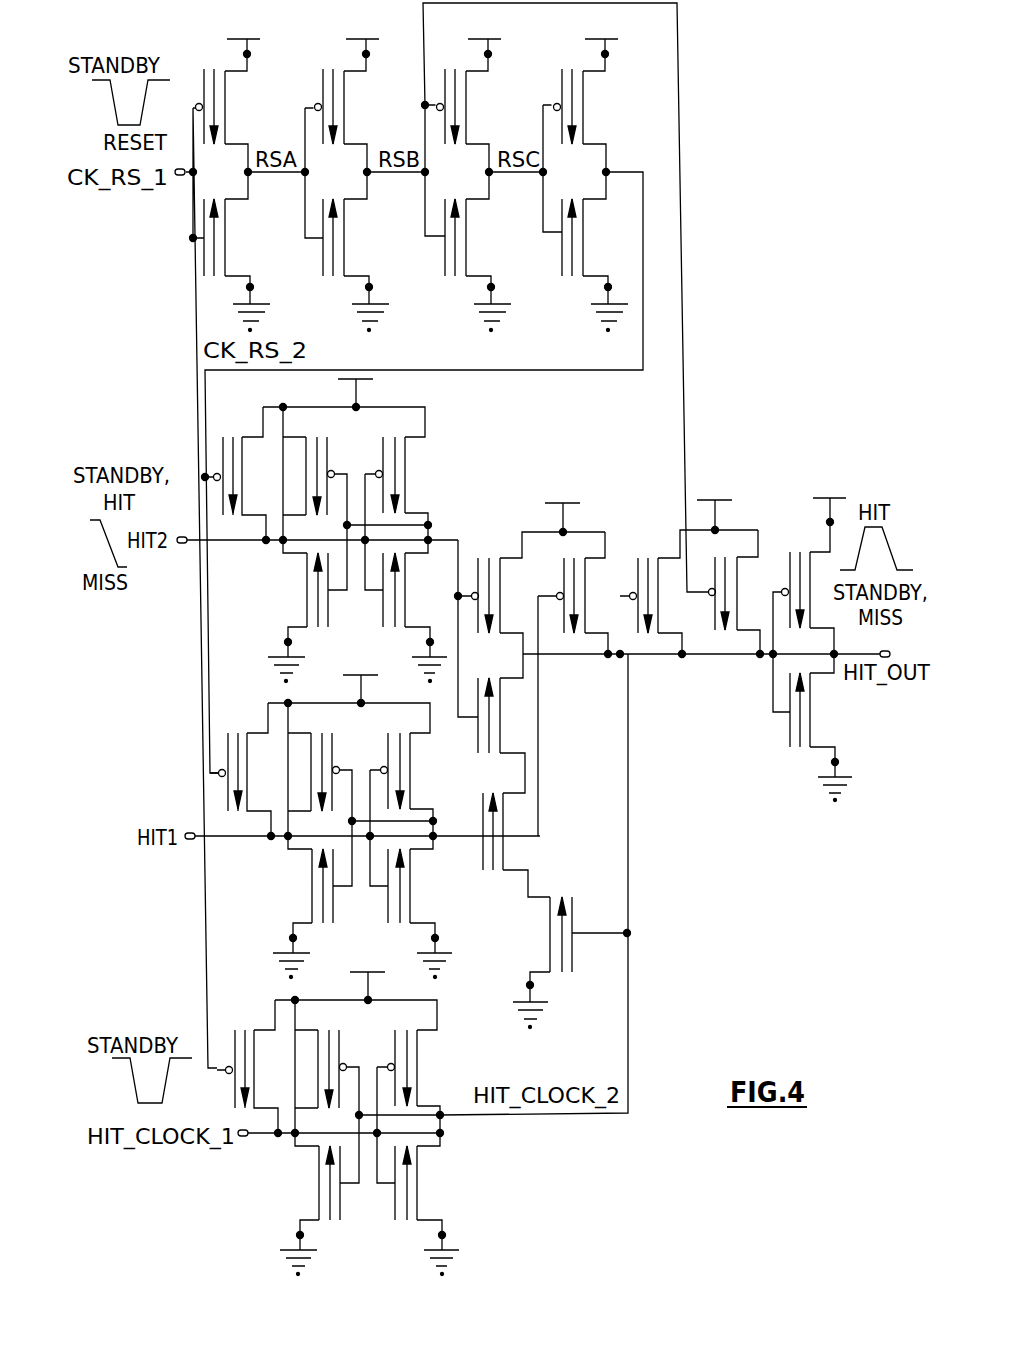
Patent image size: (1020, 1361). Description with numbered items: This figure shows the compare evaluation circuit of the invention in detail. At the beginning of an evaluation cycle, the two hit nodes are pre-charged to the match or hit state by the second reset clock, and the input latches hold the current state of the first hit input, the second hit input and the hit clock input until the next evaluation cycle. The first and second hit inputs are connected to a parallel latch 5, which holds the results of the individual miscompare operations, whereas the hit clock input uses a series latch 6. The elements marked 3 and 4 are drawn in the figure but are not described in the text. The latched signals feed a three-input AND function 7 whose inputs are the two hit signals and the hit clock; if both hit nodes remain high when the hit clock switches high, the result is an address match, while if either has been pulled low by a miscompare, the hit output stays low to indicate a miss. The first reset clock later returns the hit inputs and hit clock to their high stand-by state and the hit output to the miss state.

The HIT2 latch node 3 is at (317, 531).
The HIT1 latch node 4 is at (362, 827).
The parallel latch 5 is at (575, 595).
The series latch 6 is at (516, 746).
The AND function 7 is at (572, 947).